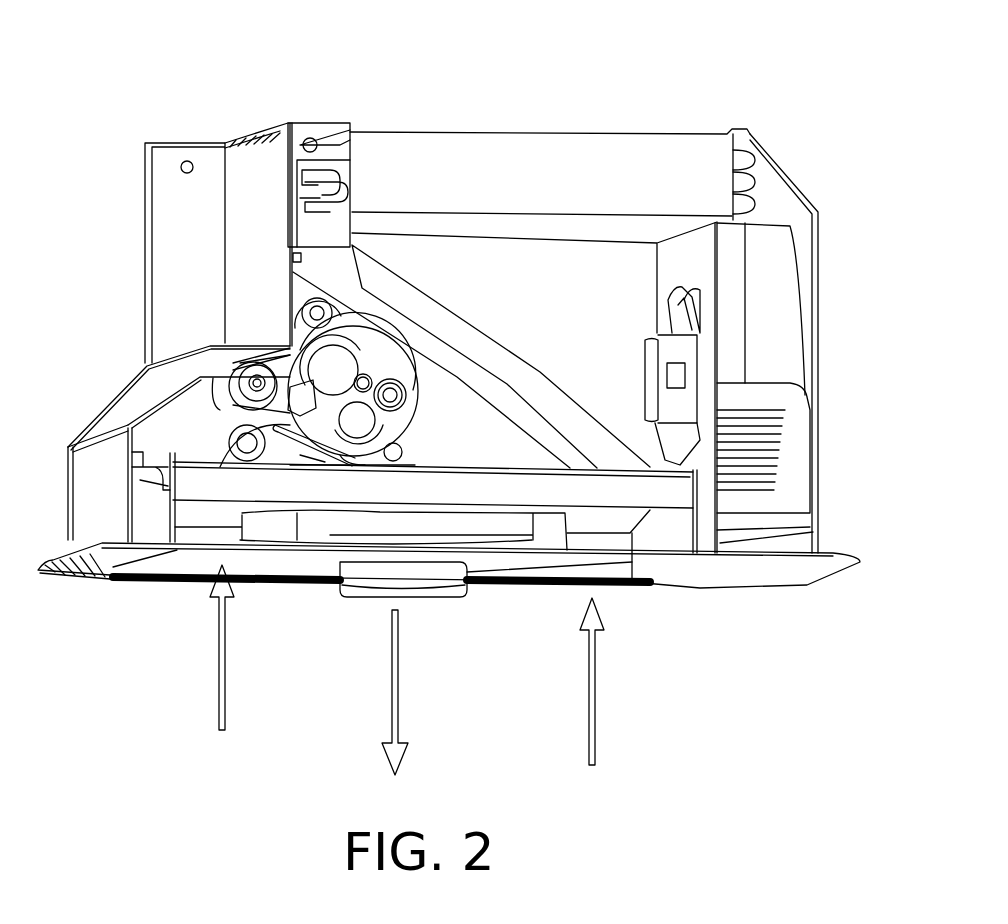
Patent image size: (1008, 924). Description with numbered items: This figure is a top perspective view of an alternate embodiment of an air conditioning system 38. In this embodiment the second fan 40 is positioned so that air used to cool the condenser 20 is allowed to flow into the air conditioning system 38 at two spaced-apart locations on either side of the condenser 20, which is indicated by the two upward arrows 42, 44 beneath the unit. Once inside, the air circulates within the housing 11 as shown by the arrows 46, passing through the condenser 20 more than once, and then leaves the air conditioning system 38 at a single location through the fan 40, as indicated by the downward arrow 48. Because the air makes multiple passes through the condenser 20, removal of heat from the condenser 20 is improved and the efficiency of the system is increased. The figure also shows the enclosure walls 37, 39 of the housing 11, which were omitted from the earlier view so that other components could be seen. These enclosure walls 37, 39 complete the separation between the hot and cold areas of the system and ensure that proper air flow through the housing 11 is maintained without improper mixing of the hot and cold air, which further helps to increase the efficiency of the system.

The housing 11 is at (188, 197).
The condenser 20 is at (197, 482).
The enclosure wall 37 is at (147, 400).
The air conditioning system 38 is at (512, 112).
The enclosure wall 39 is at (797, 183).
The second fan 40 is at (343, 593).
The arrow 42 is at (215, 687).
The arrow 44 is at (587, 713).
The arrows 46 is at (250, 423).
The arrow 48 is at (398, 688).